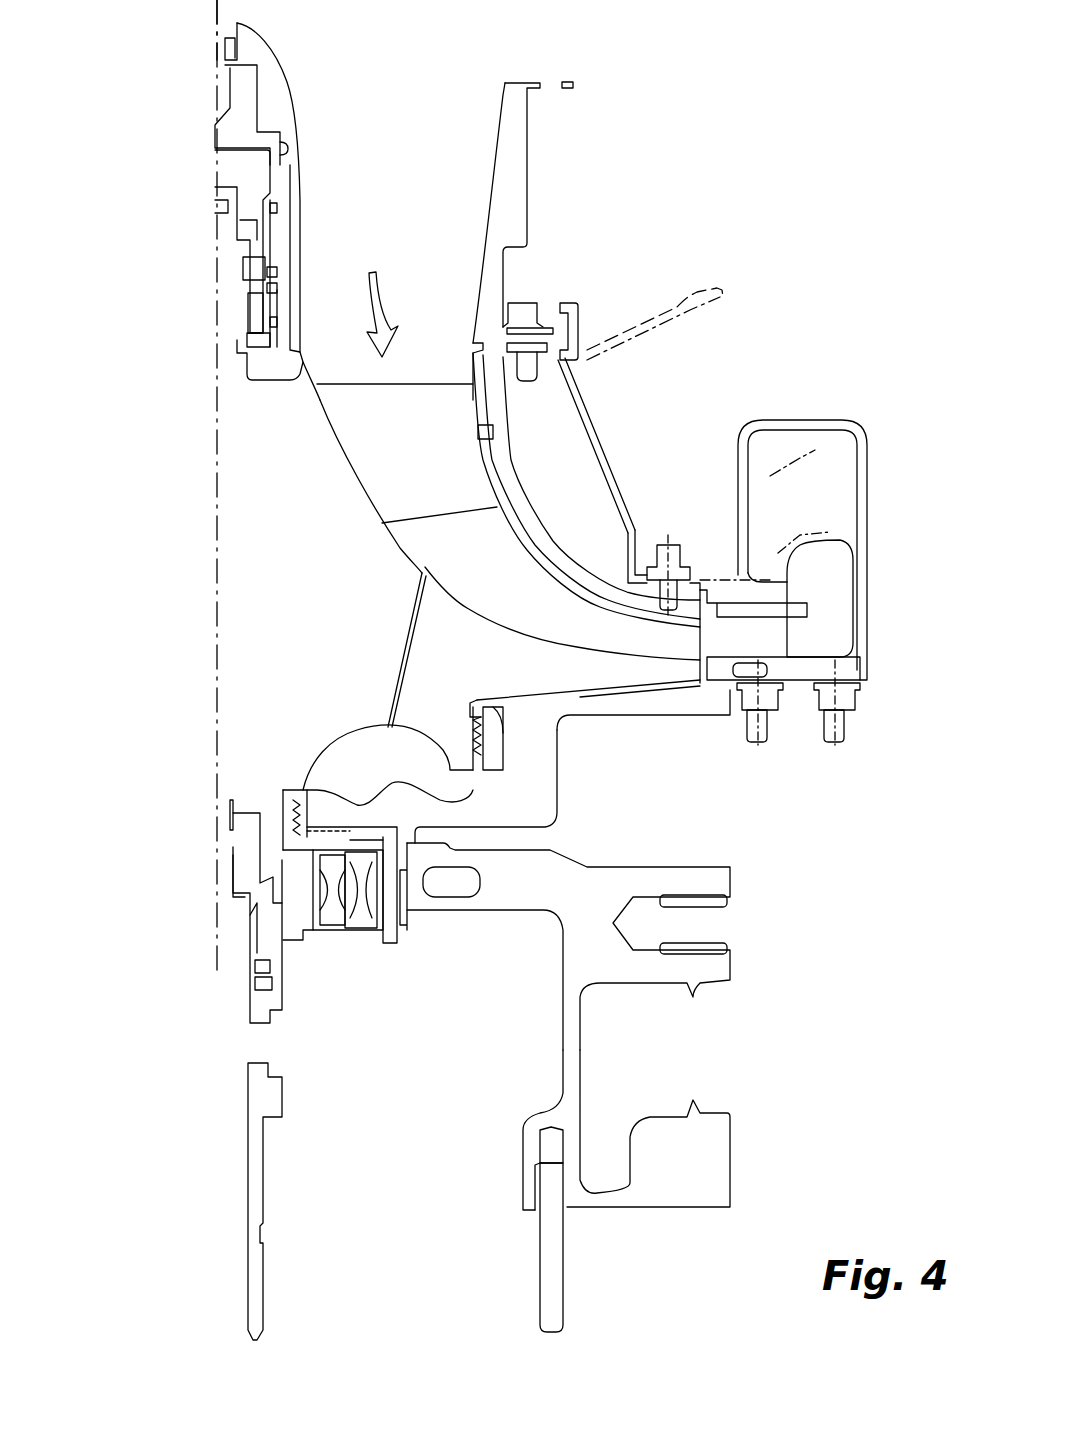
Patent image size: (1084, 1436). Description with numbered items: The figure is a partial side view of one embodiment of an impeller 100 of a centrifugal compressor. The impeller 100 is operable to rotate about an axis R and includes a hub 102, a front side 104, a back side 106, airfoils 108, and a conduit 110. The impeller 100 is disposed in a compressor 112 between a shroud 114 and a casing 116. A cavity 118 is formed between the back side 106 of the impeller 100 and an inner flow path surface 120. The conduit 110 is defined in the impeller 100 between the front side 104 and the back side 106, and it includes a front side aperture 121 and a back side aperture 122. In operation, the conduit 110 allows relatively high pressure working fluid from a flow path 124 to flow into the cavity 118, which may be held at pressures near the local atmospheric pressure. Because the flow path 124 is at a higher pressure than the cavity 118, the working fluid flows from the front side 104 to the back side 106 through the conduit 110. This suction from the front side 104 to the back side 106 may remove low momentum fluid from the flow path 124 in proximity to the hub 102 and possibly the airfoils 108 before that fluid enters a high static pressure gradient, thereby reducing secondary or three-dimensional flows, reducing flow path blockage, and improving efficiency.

The impeller 100 is at (133, 358).
The hub 102 is at (265, 475).
The front side 104 is at (424, 224).
The back side 106 is at (305, 788).
The airfoils 108 is at (438, 448).
The conduit 110 is at (405, 640).
The compressor 112 is at (648, 73).
The shroud 114 is at (580, 607).
The casing 116 is at (557, 780).
The cavity 118 is at (400, 769).
The inner flow path surface 120 is at (410, 557).
The front side aperture 121 is at (425, 569).
The back side aperture 122 is at (362, 729).
The flow path 124 is at (388, 296).
The axis R is at (212, 60).